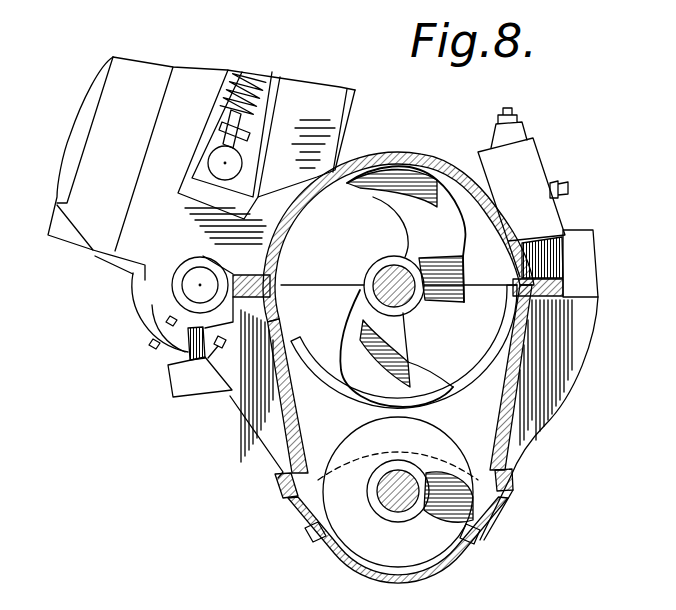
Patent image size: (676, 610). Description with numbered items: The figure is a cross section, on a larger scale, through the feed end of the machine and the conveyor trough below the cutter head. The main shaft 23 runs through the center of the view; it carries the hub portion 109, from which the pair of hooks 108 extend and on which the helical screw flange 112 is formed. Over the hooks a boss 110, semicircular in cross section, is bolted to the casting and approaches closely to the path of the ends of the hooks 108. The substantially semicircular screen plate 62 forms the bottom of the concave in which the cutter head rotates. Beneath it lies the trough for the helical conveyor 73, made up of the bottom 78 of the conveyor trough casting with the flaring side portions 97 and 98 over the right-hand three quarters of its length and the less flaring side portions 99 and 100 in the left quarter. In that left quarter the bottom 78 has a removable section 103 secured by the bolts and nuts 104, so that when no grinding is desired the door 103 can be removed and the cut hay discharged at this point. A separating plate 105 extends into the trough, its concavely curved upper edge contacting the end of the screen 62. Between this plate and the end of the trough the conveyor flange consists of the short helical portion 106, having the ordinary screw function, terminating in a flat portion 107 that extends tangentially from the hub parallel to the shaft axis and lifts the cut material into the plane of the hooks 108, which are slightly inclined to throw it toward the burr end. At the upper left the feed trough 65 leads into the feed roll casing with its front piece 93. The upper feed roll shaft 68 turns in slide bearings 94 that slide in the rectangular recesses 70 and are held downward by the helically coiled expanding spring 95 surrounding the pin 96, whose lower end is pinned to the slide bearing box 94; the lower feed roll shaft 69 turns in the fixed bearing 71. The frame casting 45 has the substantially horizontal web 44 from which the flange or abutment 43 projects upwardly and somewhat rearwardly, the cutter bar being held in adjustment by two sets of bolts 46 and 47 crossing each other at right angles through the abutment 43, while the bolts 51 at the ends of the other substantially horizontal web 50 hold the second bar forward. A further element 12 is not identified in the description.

The feed trough 65 is at (72, 142).
The helically coiled expanding spring 95 is at (238, 75).
The pin 96 is at (250, 77).
The rectangular recesses 70 is at (278, 78).
The front piece 93 is at (340, 128).
The slide bearings 94 is at (210, 143).
The shaft 68 is at (224, 164).
The boss 110 is at (400, 153).
The bolts 47 is at (507, 108).
The bolts 46 is at (561, 184).
The flange or abutment 43 is at (554, 220).
The substantially horizontal web 44 is at (556, 238).
The frame casting 45 is at (594, 233).
The fixed bearing 71 is at (195, 285).
The shaft 69 is at (152, 306).
The bolts 51 is at (215, 358).
The substantially horizontal web 50 is at (192, 396).
The less flaring side portion 99 is at (278, 374).
The flaring side portion 98 is at (243, 416).
The separating plate 105 is at (320, 432).
The bolts and nuts 104 is at (313, 540).
The removable section 103 is at (388, 575).
The helical conveyor 73 is at (444, 562).
The shaft 12 is at (398, 497).
The short helical portion 106 is at (423, 436).
The flat portion 107 is at (446, 470).
The bottom 78 is at (489, 518).
The less flaring side portion 100 is at (529, 426).
The flaring side portion 97 is at (553, 405).
The screen plate 62 is at (481, 363).
The hooks 108 is at (392, 196).
The hub portion 109 is at (382, 255).
The shaft 23 is at (373, 272).
The helical screw flange 112 is at (464, 279).